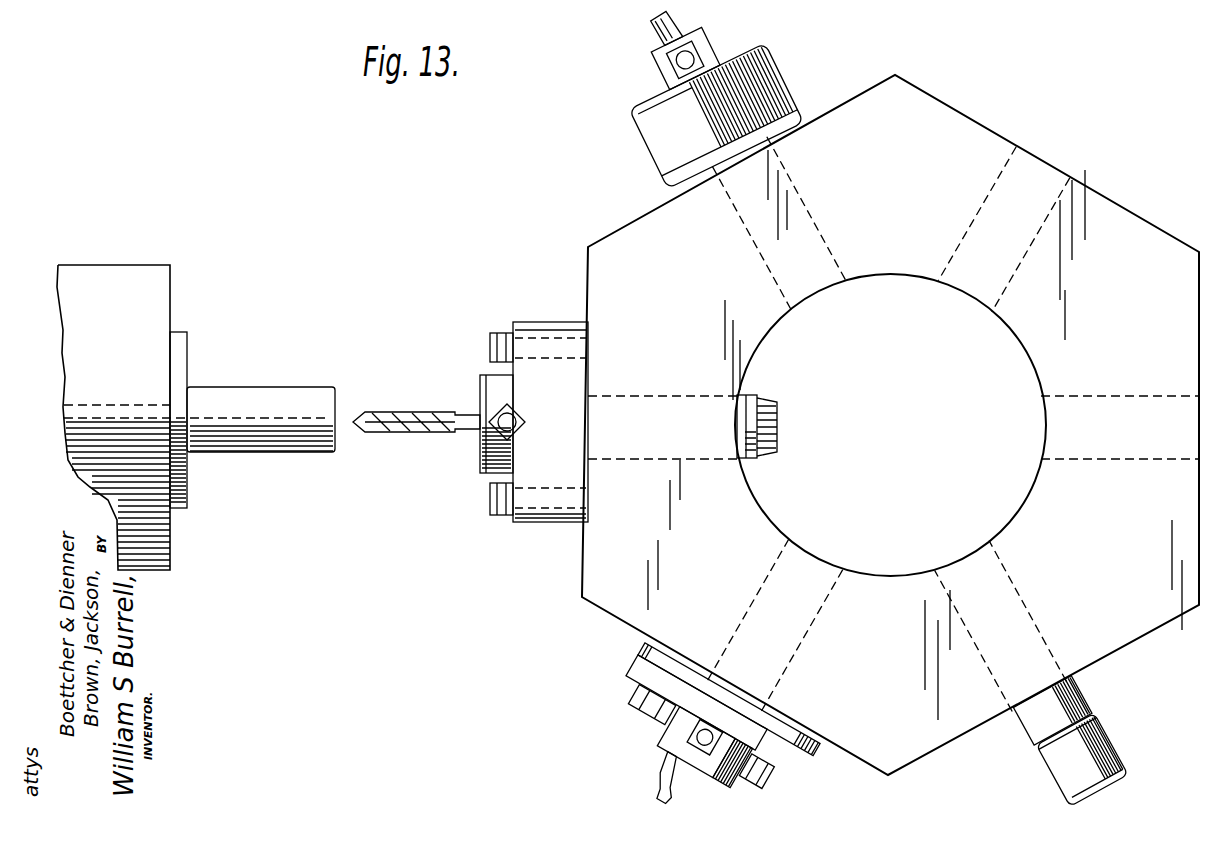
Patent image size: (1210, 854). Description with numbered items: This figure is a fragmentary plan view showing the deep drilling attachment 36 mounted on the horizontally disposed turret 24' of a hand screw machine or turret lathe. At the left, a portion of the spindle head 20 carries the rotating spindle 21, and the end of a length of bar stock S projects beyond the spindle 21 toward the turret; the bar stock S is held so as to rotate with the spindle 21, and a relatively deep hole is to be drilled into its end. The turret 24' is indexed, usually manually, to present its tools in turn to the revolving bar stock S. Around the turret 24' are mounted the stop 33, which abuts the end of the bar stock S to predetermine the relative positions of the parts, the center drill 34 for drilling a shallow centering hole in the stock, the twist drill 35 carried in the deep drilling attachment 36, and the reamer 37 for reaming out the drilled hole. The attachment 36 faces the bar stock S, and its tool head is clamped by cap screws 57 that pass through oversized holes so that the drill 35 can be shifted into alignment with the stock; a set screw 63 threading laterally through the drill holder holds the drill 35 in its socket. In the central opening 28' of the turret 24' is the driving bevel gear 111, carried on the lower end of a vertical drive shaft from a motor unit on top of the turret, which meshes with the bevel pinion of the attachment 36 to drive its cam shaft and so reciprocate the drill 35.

The spindle head 20 is at (121, 280).
The spindle 21 is at (188, 333).
The bar stock S is at (287, 400).
The twist drill 35 is at (416, 403).
The deep drilling attachment 36 is at (465, 371).
The cap screws 57 is at (497, 333).
The set screw 63 is at (518, 421).
The turret 24' is at (851, 425).
The central opening 28' is at (890, 425).
The driving bevel gear 111 is at (778, 448).
The reamer 37 is at (658, 36).
The center drill 34 is at (663, 789).
The stop 33 is at (1127, 769).